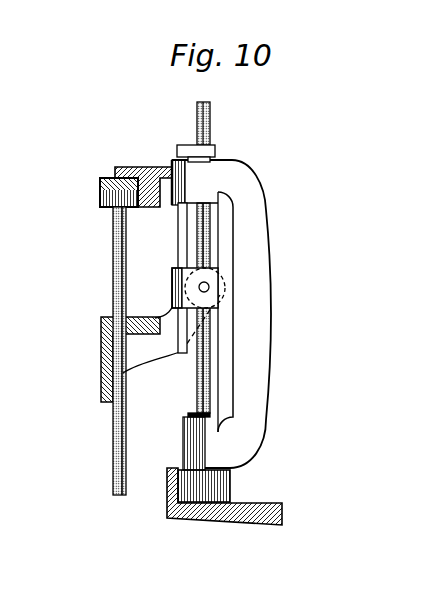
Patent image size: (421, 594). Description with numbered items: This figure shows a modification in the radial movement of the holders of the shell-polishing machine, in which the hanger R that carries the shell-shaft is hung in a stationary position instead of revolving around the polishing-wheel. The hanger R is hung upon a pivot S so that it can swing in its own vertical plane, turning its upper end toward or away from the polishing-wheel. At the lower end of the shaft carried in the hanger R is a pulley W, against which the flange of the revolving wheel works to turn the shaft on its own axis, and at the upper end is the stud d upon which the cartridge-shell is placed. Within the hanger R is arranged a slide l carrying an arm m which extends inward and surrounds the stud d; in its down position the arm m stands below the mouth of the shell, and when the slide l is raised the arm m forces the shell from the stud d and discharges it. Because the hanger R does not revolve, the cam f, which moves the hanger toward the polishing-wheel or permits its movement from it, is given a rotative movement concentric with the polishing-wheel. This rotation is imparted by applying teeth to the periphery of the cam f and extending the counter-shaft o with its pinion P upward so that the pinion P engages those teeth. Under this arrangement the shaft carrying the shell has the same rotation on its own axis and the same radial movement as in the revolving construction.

The stud d is at (207, 259).
The arm m is at (196, 147).
The cam f is at (143, 176).
The pinion P is at (110, 192).
The counter-shaft o is at (158, 351).
The hanger R is at (221, 315).
The slide l is at (190, 278).
The pivot S is at (205, 288).
The pulley W is at (224, 496).